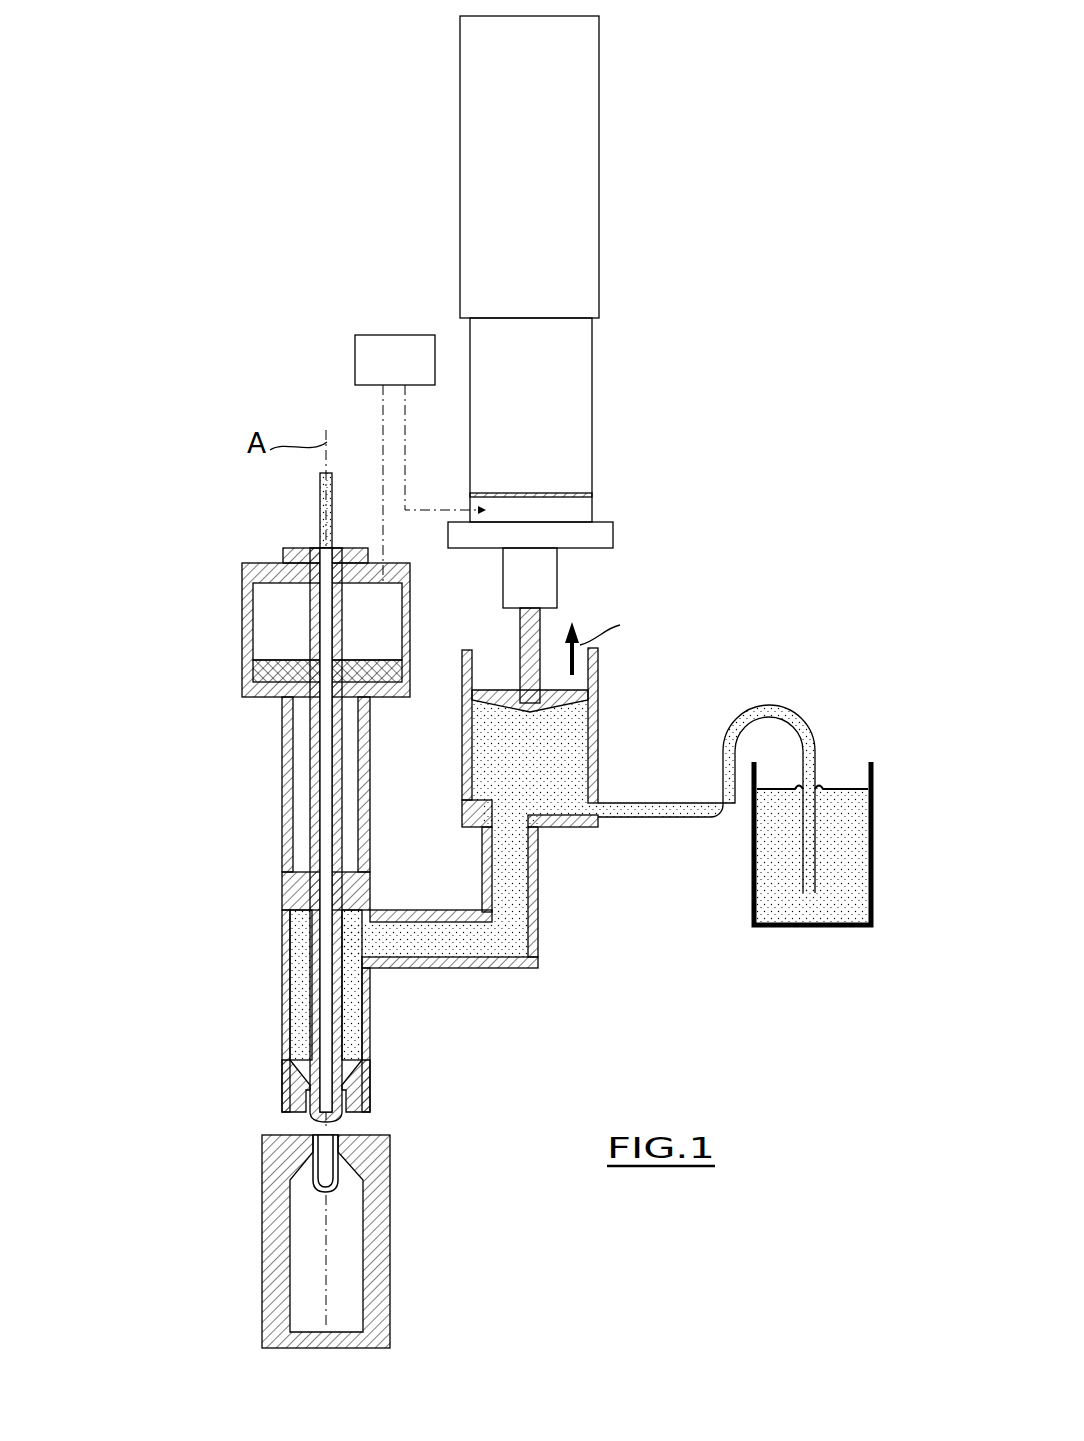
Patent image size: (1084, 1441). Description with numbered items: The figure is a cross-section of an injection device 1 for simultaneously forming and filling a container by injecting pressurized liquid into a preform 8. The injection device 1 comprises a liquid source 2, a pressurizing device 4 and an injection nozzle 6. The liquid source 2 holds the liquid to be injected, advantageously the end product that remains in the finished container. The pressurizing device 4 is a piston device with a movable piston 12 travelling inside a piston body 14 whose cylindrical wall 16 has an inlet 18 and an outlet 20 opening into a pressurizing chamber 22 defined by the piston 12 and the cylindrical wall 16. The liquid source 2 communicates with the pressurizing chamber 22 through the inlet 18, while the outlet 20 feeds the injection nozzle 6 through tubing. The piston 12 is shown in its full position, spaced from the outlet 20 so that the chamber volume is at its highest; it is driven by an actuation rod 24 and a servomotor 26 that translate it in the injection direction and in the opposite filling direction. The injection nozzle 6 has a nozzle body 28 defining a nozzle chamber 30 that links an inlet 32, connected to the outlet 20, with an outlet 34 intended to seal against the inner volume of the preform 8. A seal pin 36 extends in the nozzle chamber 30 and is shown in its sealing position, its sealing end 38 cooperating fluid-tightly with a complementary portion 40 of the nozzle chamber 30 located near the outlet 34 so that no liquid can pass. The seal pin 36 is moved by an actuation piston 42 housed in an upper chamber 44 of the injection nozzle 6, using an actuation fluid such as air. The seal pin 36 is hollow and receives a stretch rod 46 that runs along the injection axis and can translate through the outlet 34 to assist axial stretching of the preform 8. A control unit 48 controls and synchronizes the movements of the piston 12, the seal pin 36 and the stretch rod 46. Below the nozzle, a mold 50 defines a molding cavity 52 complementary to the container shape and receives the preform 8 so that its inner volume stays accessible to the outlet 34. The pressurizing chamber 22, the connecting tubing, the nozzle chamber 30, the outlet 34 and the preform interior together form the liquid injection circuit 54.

The injection device 1 is at (200, 520).
The liquid source 2 is at (808, 903).
The pressurizing device 4 is at (578, 806).
The injection nozzle 6 is at (313, 946).
The preform 8 is at (322, 1182).
The movable piston 12 is at (553, 690).
The piston body 14 is at (466, 713).
The cylindrical wall 16 is at (475, 667).
The inlet 18 is at (583, 827).
The outlet 20 is at (513, 845).
The pressurizing chamber 22 is at (500, 745).
The actuation rod 24 is at (543, 630).
The servomotor 26 is at (583, 340).
The nozzle body 28 is at (370, 1027).
The nozzle chamber 30 is at (303, 943).
The inlet 32 is at (365, 940).
The outlet 34 is at (310, 1098).
The seal pin 36 is at (300, 992).
The sealing end 38 is at (300, 1077).
The complementary portion 40 is at (370, 1090).
The actuation piston 42 is at (267, 668).
The upper chamber 44 is at (278, 606).
The stretch rod 46 is at (320, 508).
The control unit 48 is at (413, 477).
The mold 50 is at (320, 1241).
The molding cavity 52 is at (303, 1293).
The liquid injection circuit 54 is at (472, 968).